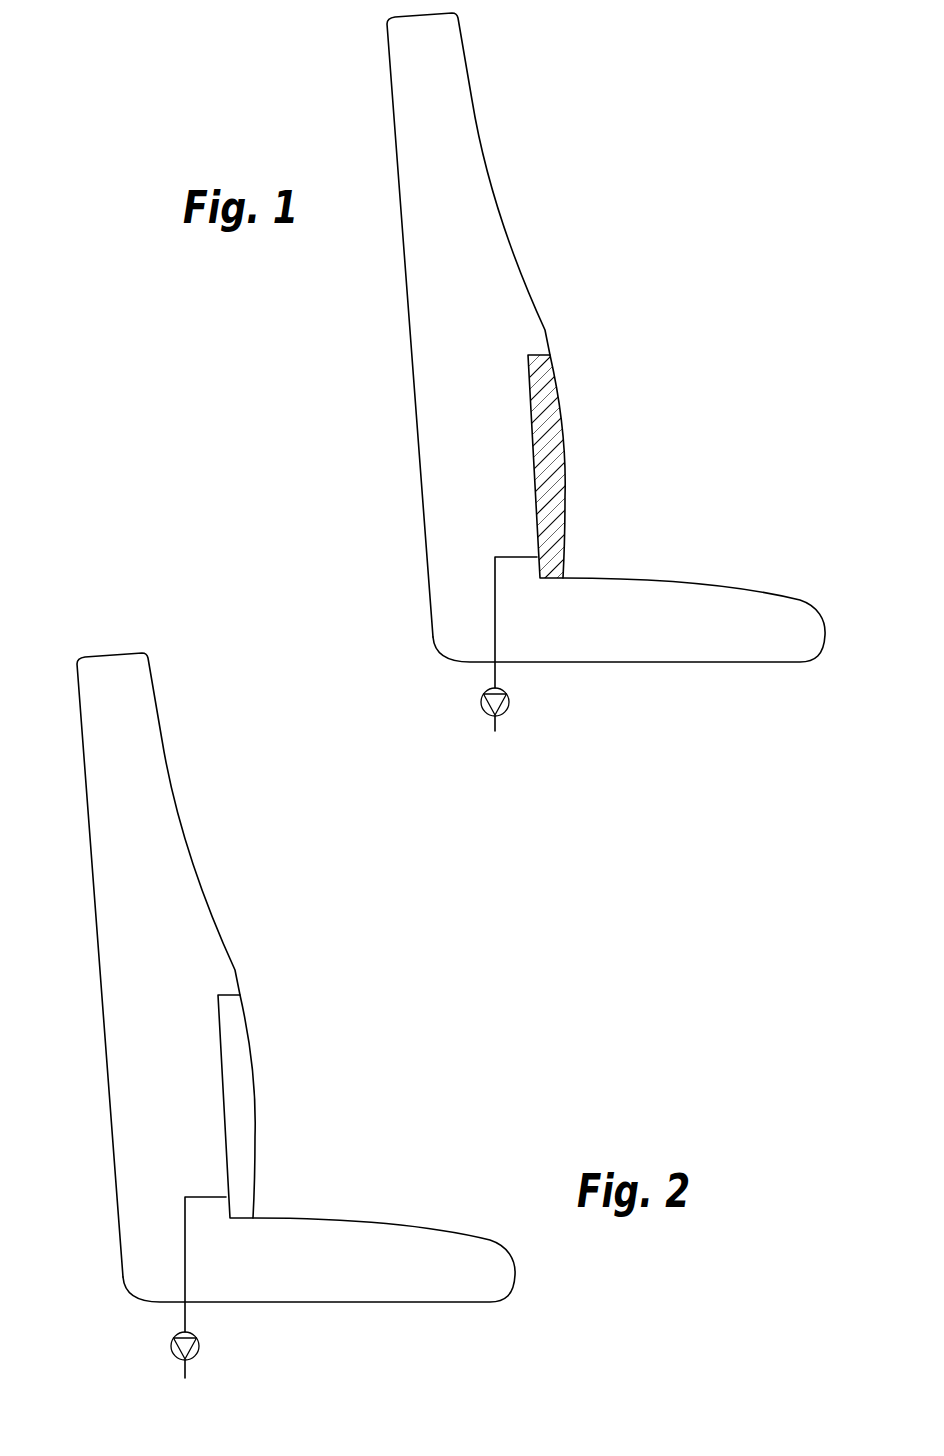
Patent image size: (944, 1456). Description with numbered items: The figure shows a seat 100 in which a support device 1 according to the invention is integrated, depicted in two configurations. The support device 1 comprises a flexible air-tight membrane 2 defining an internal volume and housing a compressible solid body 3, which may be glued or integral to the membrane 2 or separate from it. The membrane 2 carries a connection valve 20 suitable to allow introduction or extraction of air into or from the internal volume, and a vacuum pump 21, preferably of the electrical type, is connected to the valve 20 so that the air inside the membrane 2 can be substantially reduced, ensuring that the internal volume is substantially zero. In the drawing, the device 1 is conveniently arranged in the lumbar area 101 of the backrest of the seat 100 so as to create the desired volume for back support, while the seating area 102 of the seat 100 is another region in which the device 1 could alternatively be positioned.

In FIG. 1, the seat 100 is at (606, 337).
In FIG. 2, the seat 100 is at (323, 977).
In FIG. 1, the lumbar area 101 is at (558, 395).
In FIG. 2, the lumbar area 101 is at (267, 1052).
In FIG. 2, the seating area 102 is at (360, 1271).
In FIG. 1, the support device 1 is at (545, 470).
In FIG. 2, the support device 1 is at (236, 1110).
In FIG. 1, the flexible air-tight membrane 2 is at (528, 430).
In FIG. 2, the flexible air-tight membrane 2 is at (222, 1087).
In FIG. 1, the compressible solid body 3 is at (618, 455).
In FIG. 2, the compressible solid body 3 is at (255, 1180).
In FIG. 1, the connection valve 20 is at (535, 554).
In FIG. 2, the connection valve 20 is at (225, 1194).
In FIG. 1, the vacuum pump 21 is at (510, 702).
In FIG. 2, the vacuum pump 21 is at (200, 1345).